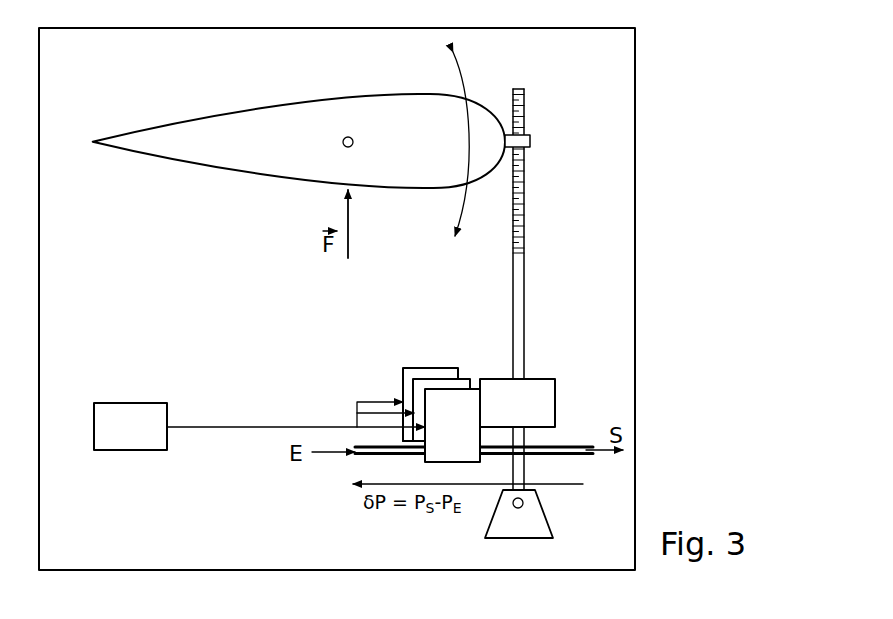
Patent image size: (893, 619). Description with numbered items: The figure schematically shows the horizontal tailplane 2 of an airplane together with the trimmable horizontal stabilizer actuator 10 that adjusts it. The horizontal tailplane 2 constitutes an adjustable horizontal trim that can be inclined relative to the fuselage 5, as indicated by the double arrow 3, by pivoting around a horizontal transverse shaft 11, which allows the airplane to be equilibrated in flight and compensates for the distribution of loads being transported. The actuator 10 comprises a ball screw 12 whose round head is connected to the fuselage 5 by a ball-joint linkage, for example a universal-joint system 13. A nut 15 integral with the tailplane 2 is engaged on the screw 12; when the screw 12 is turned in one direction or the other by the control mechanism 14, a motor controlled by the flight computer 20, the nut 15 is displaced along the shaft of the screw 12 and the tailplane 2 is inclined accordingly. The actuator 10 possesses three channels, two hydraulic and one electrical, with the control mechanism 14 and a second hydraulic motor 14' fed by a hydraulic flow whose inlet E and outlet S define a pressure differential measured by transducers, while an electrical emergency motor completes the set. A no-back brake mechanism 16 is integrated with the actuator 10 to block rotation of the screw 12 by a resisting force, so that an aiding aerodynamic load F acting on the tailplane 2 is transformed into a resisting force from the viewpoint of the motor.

The horizontal tailplane 2 is at (385, 94).
The double arrow 3 is at (468, 85).
The fuselage 5 is at (635, 97).
The trimmable horizontal stabilizer actuator 10 is at (352, 372).
The horizontal transverse shaft 11 is at (343, 142).
The ball screw 12 is at (524, 305).
The universal-joint system 13 is at (541, 520).
The control mechanism 14 is at (452, 425).
The hydraulic motor 14' is at (441, 381).
The nut 15 is at (530, 141).
The no-back brake mechanism 16 is at (555, 405).
The flight control computer 20 is at (130, 426).